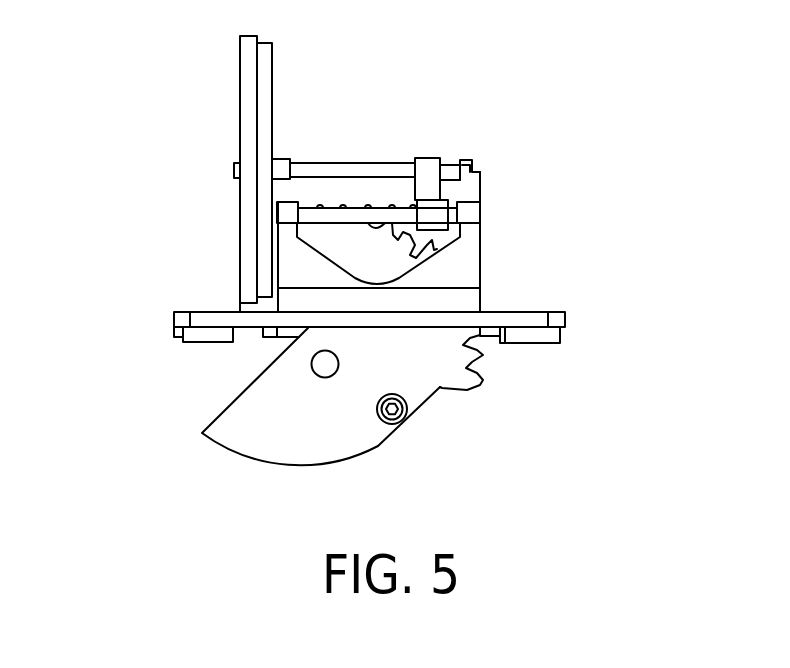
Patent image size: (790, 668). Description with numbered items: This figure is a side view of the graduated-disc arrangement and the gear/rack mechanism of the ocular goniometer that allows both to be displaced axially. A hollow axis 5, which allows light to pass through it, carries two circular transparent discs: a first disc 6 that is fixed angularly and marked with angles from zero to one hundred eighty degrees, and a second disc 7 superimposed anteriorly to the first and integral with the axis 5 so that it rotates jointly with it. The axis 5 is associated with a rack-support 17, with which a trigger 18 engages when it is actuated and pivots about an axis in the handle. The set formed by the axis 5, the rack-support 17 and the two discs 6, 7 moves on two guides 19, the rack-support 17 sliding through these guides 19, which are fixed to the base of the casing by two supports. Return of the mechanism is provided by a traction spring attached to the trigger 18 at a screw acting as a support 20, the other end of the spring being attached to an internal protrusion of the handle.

The axis 5 is at (317, 166).
The first disc 6 is at (240, 95).
The second disc 7 is at (212, 75).
The rack-support 17 is at (353, 185).
The trigger 18 is at (413, 418).
The guides 19 is at (352, 217).
The support screw 20 is at (377, 368).